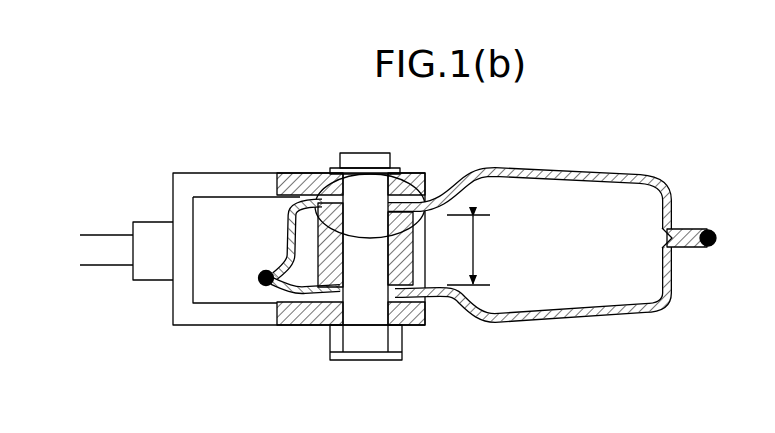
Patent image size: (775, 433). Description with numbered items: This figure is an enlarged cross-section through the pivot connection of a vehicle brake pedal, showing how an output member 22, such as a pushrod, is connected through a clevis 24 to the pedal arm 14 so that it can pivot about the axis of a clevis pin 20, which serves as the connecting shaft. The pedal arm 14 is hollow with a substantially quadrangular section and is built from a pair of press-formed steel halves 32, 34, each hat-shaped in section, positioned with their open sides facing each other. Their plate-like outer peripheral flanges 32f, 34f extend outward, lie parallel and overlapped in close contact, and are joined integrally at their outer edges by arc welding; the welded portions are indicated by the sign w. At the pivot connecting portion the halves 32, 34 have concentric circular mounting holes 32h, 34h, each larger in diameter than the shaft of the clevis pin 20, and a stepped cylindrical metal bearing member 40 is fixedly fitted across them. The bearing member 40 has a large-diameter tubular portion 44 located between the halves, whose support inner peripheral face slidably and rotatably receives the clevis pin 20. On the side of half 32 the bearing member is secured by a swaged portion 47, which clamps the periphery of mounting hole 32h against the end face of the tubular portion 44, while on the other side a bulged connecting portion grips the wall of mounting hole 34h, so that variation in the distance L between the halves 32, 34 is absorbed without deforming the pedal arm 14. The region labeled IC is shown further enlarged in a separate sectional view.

The pedal arm 14 is at (637, 140).
The clevis pin 20 is at (340, 344).
The output member 22 is at (108, 258).
The clevis 24 is at (213, 186).
The half 32 is at (547, 320).
The outer peripheral flange 32f is at (278, 308).
The mounting hole 32h is at (362, 332).
The half 34 is at (533, 174).
The outer peripheral flange 34f is at (281, 268).
The mounting hole 34h is at (356, 178).
The bearing member 40 is at (322, 190).
The large-diameter tubular portion 44 is at (412, 255).
The swaged portion 47 is at (405, 323).
The distance between the pair of halves L is at (471, 250).
The portion IC is at (434, 187).
The welded portions w is at (262, 276).